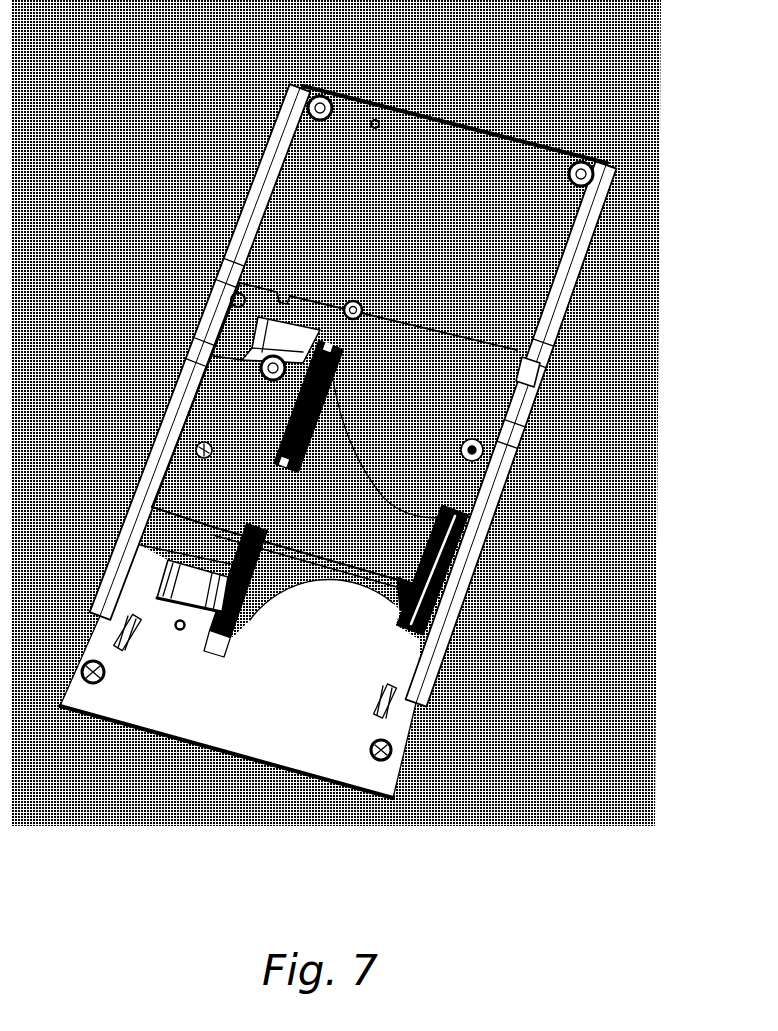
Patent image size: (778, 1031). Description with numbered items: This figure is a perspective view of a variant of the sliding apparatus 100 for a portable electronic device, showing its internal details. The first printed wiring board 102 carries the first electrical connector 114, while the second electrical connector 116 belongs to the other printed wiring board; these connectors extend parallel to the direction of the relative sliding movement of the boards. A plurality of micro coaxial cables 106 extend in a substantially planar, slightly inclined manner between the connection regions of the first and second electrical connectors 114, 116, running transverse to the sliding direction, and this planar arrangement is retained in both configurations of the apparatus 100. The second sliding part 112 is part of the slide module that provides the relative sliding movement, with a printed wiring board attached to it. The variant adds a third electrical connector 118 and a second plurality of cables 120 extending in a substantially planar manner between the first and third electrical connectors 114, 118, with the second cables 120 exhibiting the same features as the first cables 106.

The apparatus 100 is at (574, 83).
The first printed wiring board 102 is at (295, 445).
The micro coaxial cables 106 is at (370, 502).
The second sliding part 112 is at (103, 650).
The first electrical connector 114 is at (450, 568).
The second electrical connector 116 is at (303, 395).
The third electrical connector 118 is at (272, 580).
The second plurality of cables 120 is at (233, 527).